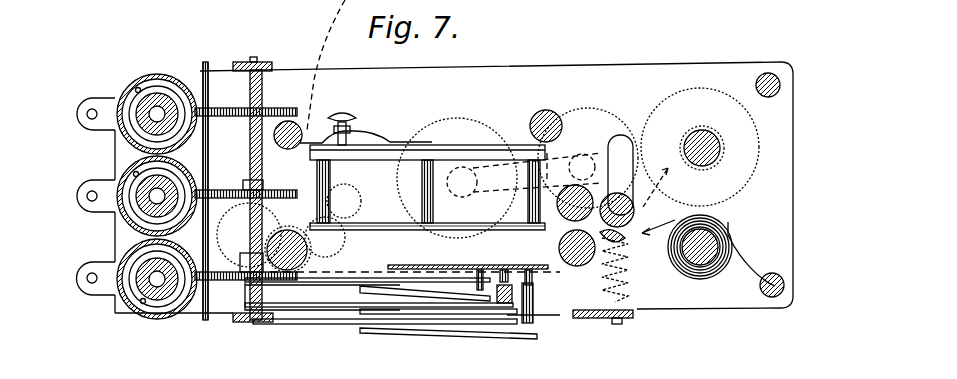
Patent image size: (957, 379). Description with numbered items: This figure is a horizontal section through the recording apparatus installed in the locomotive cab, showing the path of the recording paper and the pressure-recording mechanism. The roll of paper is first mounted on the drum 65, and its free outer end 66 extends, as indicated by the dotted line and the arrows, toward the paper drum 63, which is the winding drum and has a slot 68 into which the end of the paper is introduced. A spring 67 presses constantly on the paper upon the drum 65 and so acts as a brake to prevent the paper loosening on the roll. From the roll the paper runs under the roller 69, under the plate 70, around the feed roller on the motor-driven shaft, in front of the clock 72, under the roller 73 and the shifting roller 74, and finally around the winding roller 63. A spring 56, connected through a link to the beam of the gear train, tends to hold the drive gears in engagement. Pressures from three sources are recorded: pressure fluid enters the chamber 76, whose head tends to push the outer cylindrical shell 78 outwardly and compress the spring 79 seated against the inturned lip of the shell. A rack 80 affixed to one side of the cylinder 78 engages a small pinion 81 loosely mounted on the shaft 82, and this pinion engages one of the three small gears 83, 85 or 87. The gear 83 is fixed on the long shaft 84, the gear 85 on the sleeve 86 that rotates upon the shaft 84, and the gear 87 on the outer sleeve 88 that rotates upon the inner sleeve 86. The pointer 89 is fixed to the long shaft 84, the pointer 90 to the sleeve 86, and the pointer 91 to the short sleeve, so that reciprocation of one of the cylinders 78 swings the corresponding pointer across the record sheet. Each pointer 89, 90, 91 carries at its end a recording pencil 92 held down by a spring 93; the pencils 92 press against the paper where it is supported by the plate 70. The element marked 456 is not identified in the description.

The spring 56 is at (637, 283).
The paper drum 63 is at (703, 165).
The drum 65 is at (708, 265).
The free outer end 66 is at (626, 243).
The spring 67 is at (753, 257).
The slot 68 is at (695, 132).
The roller 69 is at (573, 266).
The plate 70 is at (473, 263).
The clock 72 is at (499, 178).
The roller 73 is at (572, 193).
The shifting roller 74 is at (622, 201).
The chamber 76 is at (157, 113).
The outer cylindrical shell 78 is at (143, 75).
The spring 79 is at (127, 107).
The rack 80 is at (190, 143).
The pinion 81 is at (208, 113).
The shaft 82 is at (209, 158).
The gear 83 is at (267, 108).
The long shaft 84 is at (251, 134).
The gear 85 is at (267, 190).
The sleeve 86 is at (253, 238).
The gear 87 is at (240, 280).
The outer sleeve 88 is at (242, 287).
The pointer 89 is at (293, 332).
The pointer 90 is at (333, 315).
The pointer 91 is at (353, 288).
The recording stylus or pencil 92 is at (537, 283).
The spring 93 is at (497, 339).
The gear 456 is at (343, 257).